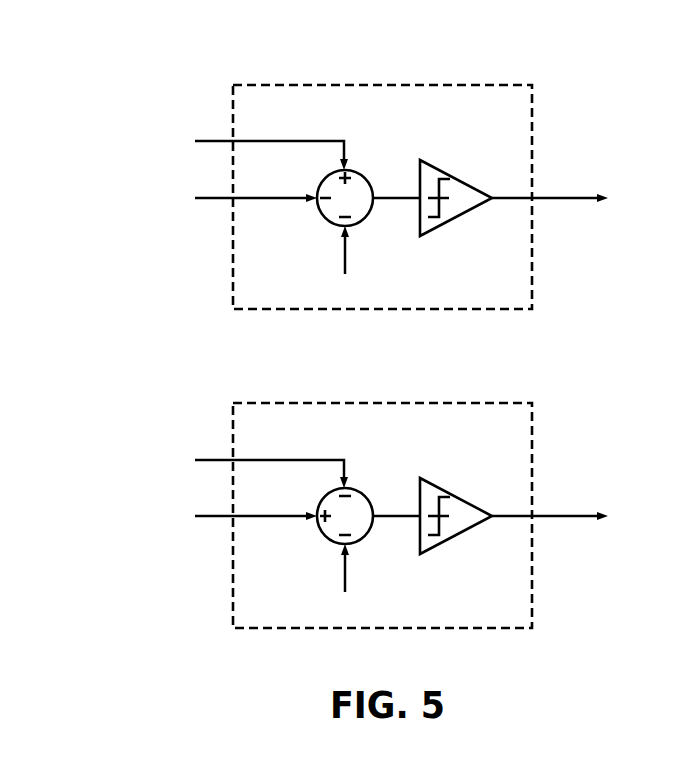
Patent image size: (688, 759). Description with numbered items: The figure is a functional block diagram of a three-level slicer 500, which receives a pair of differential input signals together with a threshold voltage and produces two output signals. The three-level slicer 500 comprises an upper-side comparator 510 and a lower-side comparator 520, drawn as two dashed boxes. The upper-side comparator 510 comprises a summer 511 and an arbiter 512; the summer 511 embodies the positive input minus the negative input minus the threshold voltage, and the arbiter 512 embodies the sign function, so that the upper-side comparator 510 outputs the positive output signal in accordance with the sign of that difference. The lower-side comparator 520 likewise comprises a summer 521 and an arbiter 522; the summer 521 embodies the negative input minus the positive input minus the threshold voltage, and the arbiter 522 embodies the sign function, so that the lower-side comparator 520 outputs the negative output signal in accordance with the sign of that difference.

The 3-level slicer 500 is at (191, 596).
The upper-side comparator 510 is at (532, 85).
The summer 511 is at (323, 219).
The arbiter 512 is at (465, 175).
The lower-side comparator 520 is at (532, 403).
The summer 521 is at (323, 537).
The arbiter 522 is at (465, 493).